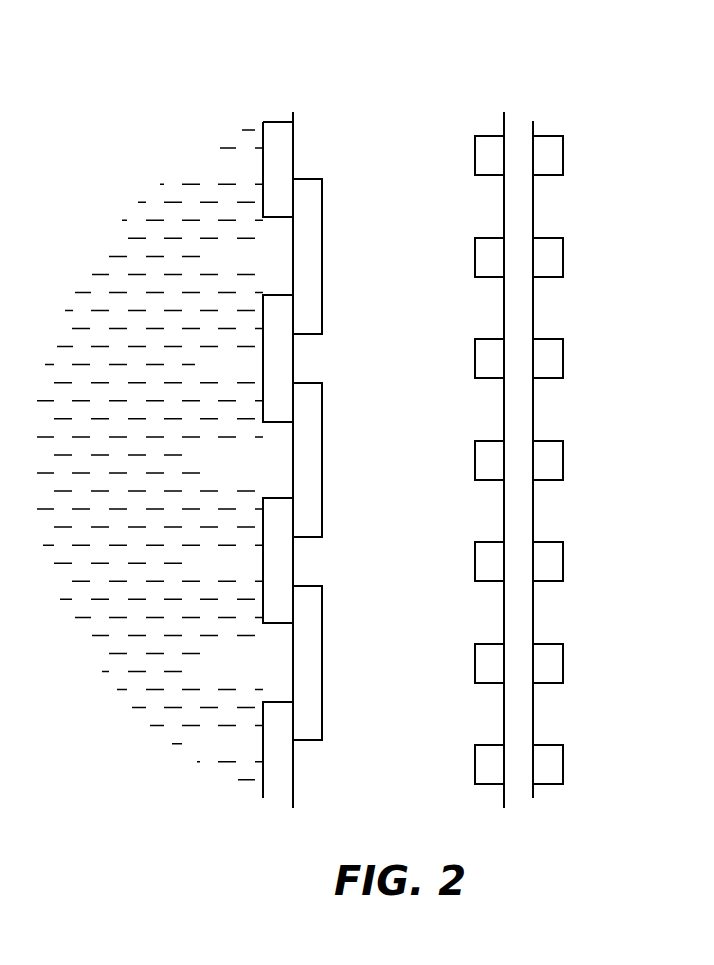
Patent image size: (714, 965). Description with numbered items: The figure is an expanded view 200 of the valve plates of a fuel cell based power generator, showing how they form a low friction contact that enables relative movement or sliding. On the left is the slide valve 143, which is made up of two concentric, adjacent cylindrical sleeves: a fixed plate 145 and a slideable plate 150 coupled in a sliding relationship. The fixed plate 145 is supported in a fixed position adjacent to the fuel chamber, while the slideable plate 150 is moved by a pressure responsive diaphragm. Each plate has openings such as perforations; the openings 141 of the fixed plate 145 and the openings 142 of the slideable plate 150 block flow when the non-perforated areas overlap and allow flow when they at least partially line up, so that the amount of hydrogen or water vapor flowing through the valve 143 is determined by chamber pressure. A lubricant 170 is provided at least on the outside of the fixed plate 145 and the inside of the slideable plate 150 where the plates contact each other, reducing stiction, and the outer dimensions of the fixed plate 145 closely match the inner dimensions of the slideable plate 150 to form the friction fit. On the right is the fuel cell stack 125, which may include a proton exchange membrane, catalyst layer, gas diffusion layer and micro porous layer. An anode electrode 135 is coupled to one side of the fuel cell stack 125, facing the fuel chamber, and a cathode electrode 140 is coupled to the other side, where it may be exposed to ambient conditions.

The expanded view 200 is at (210, 48).
The slide valve 143 is at (243, 110).
The fuel cell stack 125 is at (468, 111).
The openings 142 is at (295, 158).
The fixed plate 145 is at (263, 167).
The openings 141 is at (274, 257).
The slideable plate 150 is at (324, 258).
The anode electrode 135 is at (474, 157).
The cathode electrode 140 is at (564, 157).
The lubricant 170 is at (292, 788).